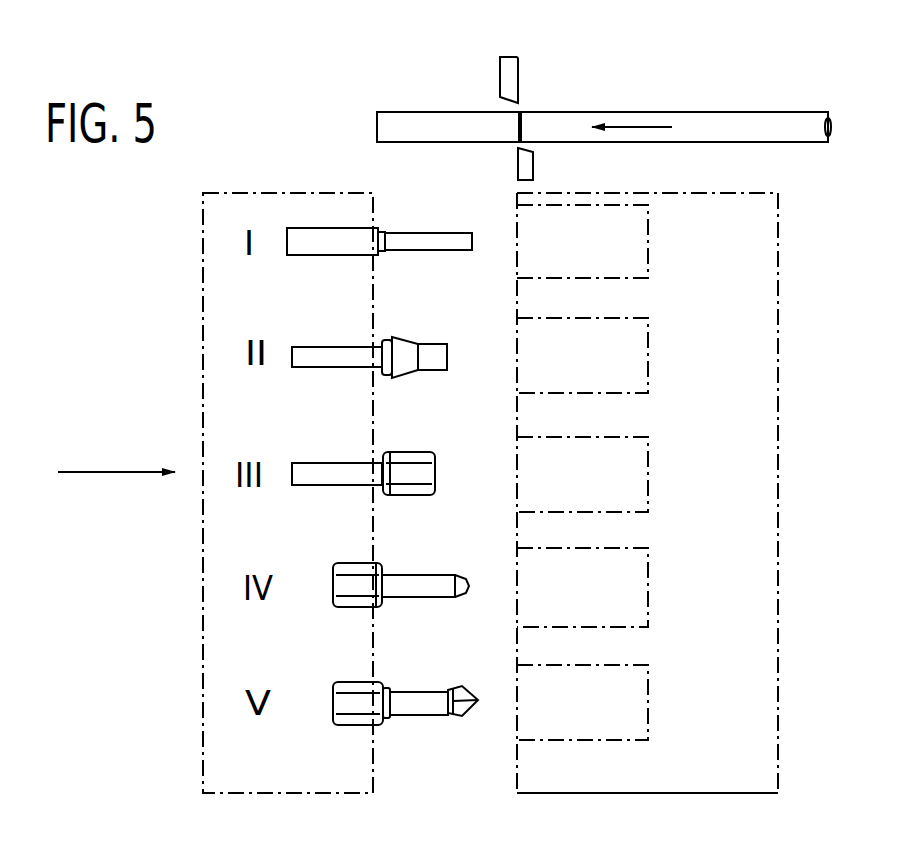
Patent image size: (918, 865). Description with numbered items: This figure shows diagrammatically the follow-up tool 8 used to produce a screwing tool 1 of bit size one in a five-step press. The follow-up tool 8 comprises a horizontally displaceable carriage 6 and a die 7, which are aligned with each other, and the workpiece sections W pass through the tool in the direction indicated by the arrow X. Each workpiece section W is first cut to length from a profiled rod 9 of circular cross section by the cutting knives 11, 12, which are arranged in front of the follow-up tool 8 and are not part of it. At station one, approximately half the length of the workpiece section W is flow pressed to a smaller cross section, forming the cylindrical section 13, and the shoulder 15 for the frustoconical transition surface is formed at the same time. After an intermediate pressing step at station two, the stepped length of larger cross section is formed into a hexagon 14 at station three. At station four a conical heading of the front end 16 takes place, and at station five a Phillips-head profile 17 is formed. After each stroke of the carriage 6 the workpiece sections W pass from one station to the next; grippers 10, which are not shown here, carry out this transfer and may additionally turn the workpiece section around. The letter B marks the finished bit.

The screwing tool 1 is at (413, 745).
The carriage 6 is at (200, 641).
The die 7 is at (780, 309).
The follow-up tool 8 is at (180, 548).
The profiled rod 9 is at (697, 127).
The grippers 10 is at (374, 6).
The cutting knife 11 is at (507, 80).
The cutting knife 12 is at (522, 164).
The cylindrical section 13 is at (427, 244).
The hexagon 14 is at (403, 472).
The shoulder 15 is at (381, 255).
The front end 16 is at (463, 577).
The Phillips-head profile 17 is at (463, 692).
The workpiece section W is at (438, 128).
The bit B is at (421, 700).
The direction of passage X is at (443, 215).